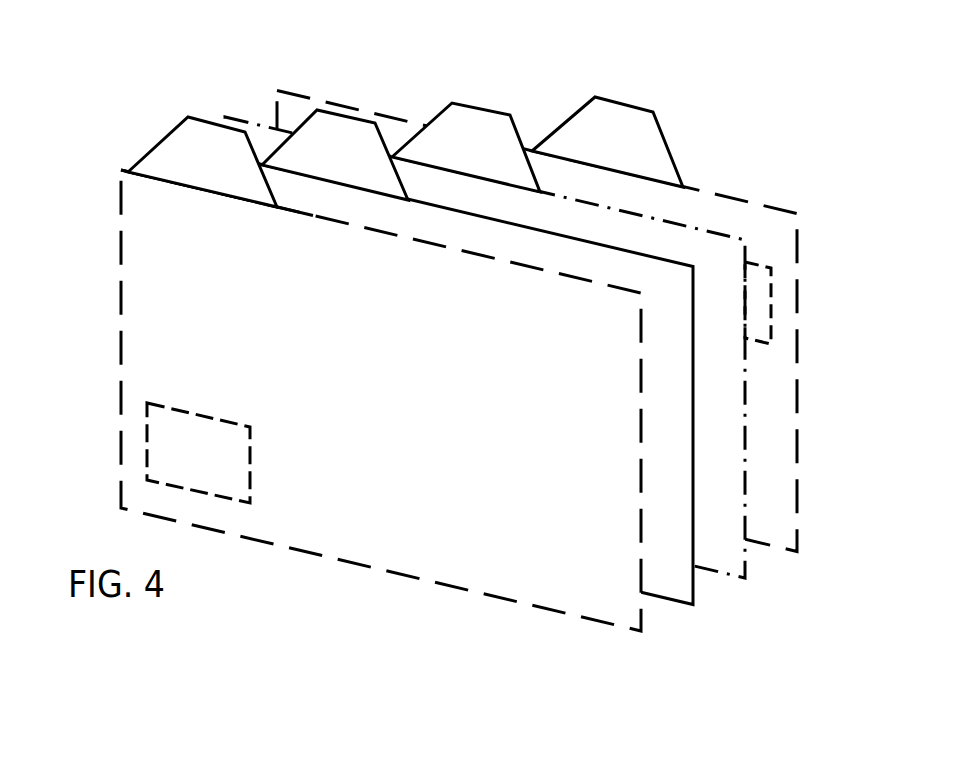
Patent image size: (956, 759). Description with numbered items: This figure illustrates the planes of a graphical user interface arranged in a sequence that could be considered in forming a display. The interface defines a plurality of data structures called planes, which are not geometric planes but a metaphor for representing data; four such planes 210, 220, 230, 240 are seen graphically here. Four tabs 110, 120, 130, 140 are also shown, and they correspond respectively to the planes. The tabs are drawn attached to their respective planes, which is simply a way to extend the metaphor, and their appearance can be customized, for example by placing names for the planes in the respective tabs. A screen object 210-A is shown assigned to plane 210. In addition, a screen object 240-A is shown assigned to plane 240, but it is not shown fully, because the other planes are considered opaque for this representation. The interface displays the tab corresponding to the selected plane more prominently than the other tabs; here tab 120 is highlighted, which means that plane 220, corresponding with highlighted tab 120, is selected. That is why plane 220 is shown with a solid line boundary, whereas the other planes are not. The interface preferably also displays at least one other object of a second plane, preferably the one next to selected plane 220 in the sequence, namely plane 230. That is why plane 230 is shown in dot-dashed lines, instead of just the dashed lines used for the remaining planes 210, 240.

The tab 110 is at (217, 112).
The tab 120 is at (345, 100).
The tab 130 is at (480, 97).
The tab 140 is at (625, 93).
The plane 210 is at (644, 649).
The screen object 210-A is at (134, 434).
The plane 220 is at (694, 621).
The plane 230 is at (748, 597).
The plane 240 is at (800, 569).
The screen object 240-A is at (786, 283).